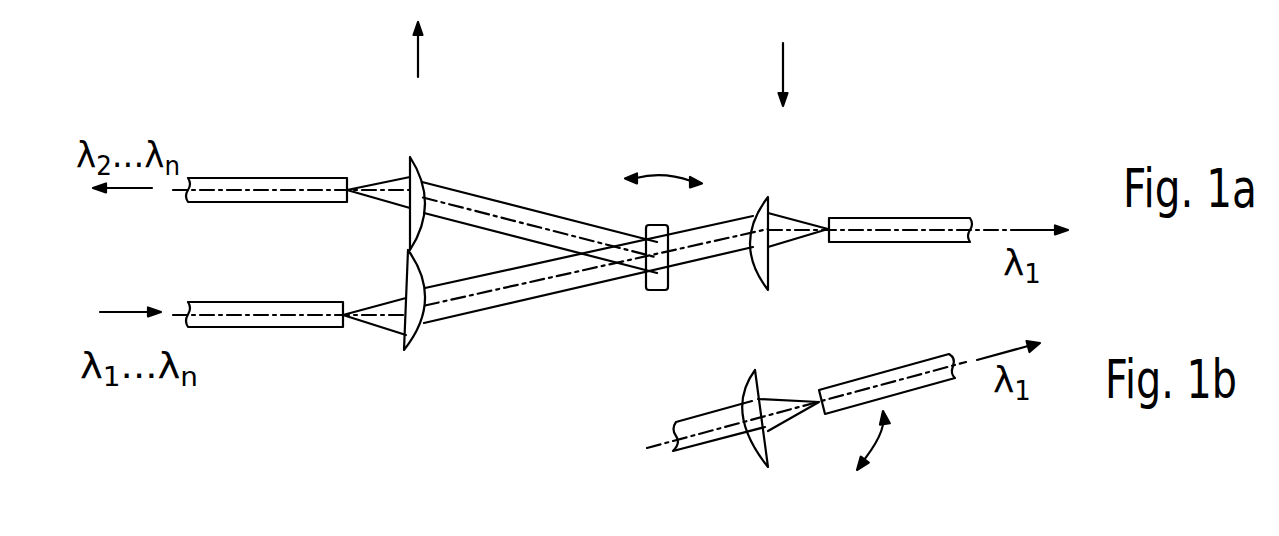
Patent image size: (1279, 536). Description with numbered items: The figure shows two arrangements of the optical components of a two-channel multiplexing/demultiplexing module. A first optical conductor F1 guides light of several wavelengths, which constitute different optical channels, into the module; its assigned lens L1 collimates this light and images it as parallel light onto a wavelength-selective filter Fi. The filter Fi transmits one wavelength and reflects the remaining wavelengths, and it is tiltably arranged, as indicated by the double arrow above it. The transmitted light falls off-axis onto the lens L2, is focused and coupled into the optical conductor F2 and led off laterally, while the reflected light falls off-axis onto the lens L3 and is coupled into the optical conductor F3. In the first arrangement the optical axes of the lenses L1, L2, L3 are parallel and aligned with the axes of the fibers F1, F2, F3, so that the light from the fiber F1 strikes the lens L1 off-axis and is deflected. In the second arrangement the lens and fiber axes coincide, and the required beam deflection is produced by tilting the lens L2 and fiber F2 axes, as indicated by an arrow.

In FIG. 1A, the first optical conductor F1 is at (289, 290).
In FIG. 1A, the optical conductor F2 is at (900, 205).
In FIG. 1B, the optical conductor F2 is at (887, 365).
In FIG. 1A, the optical conductor F3 is at (291, 165).
In FIG. 1A, the lens L1 is at (412, 328).
In FIG. 1A, the lens L2 is at (769, 214).
In FIG. 1B, the lens L2 is at (747, 395).
In FIG. 1A, the lens L3 is at (422, 175).
In FIG. 1A, the wavelength-selective filter Fi is at (663, 232).